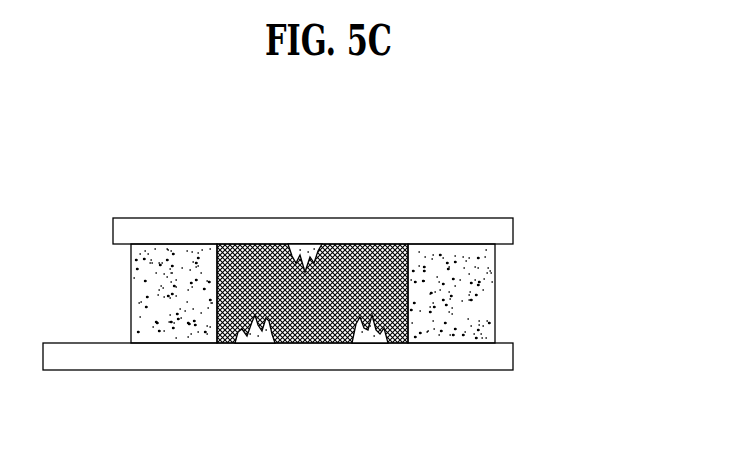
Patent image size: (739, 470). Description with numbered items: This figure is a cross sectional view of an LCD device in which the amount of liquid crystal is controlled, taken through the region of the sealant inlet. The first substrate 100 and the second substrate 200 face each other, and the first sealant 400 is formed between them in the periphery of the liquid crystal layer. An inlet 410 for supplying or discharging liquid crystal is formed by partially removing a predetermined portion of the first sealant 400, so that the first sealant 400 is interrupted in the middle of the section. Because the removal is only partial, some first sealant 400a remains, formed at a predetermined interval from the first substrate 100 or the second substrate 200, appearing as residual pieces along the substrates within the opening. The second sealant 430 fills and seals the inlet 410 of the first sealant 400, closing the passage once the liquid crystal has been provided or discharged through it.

The first substrate 100 is at (116, 232).
The second substrate 200 is at (428, 358).
The first sealant 400 is at (168, 332).
The first sealant remaining portion 400a is at (307, 245).
The second sealant 430 is at (331, 245).
The inlet 410 is at (388, 245).